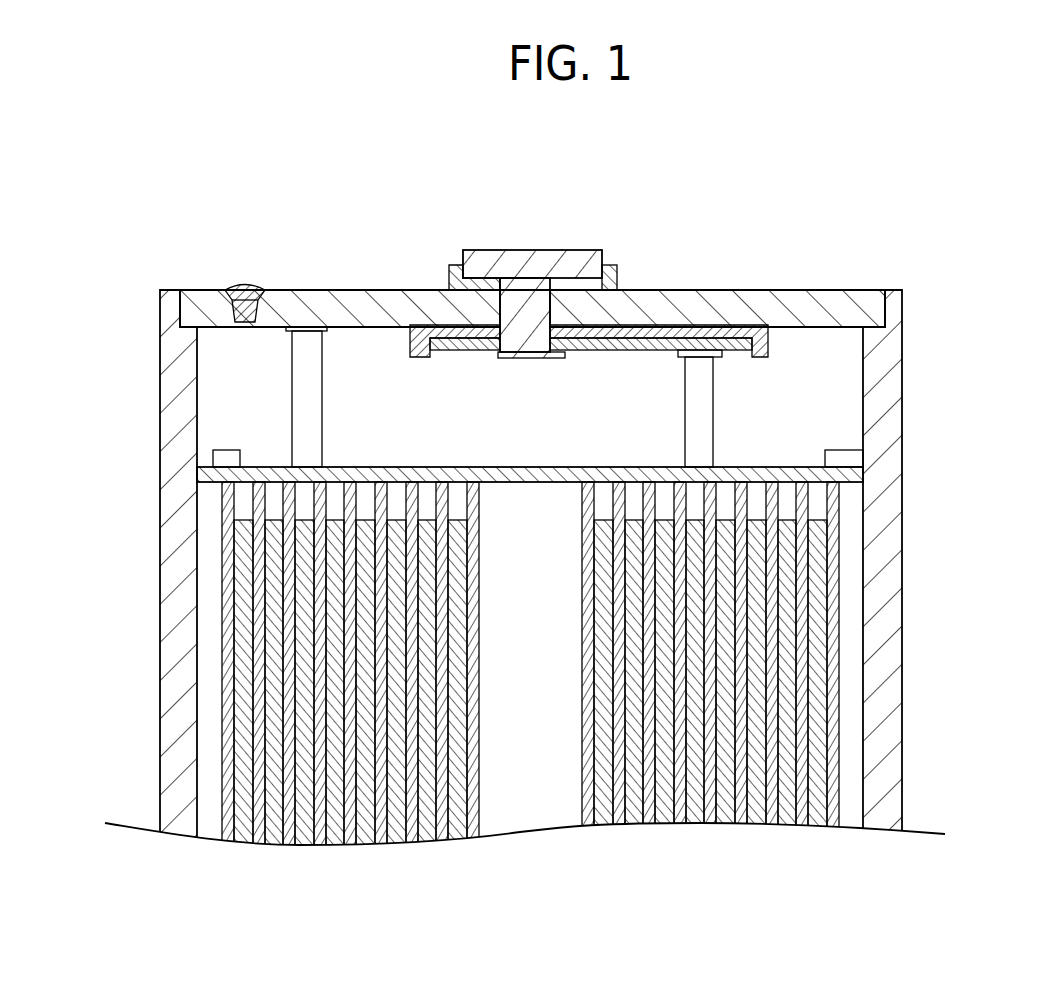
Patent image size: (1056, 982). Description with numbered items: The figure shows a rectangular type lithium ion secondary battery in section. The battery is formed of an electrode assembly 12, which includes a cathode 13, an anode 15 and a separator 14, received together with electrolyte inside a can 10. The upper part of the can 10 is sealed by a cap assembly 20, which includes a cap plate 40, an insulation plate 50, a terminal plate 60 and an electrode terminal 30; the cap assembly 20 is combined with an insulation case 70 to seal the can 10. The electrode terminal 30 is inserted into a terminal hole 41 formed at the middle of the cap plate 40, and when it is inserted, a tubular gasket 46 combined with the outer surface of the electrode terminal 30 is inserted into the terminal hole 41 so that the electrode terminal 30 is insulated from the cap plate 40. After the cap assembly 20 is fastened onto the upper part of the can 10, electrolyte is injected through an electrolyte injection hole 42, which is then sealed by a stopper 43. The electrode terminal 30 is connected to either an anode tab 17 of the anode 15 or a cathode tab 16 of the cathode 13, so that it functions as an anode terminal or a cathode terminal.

The can 10 is at (888, 682).
The electrode assembly 12 is at (621, 712).
The cathode 13 is at (799, 824).
The separator 14 is at (816, 824).
The anode 15 is at (786, 824).
The cathode tab 16 is at (302, 387).
The anode tab 17 is at (700, 424).
The cap assembly 20 is at (706, 264).
The electrode terminal 30 is at (532, 270).
The cap plate 40 is at (777, 290).
The terminal hole 41 is at (448, 277).
The electrolyte injection hole 42 is at (230, 305).
The stopper 43 is at (244, 286).
The tubular gasket 46 is at (608, 265).
The insulation plate 50 is at (766, 355).
The terminal plate 60 is at (595, 350).
The insulation case 70 is at (268, 467).